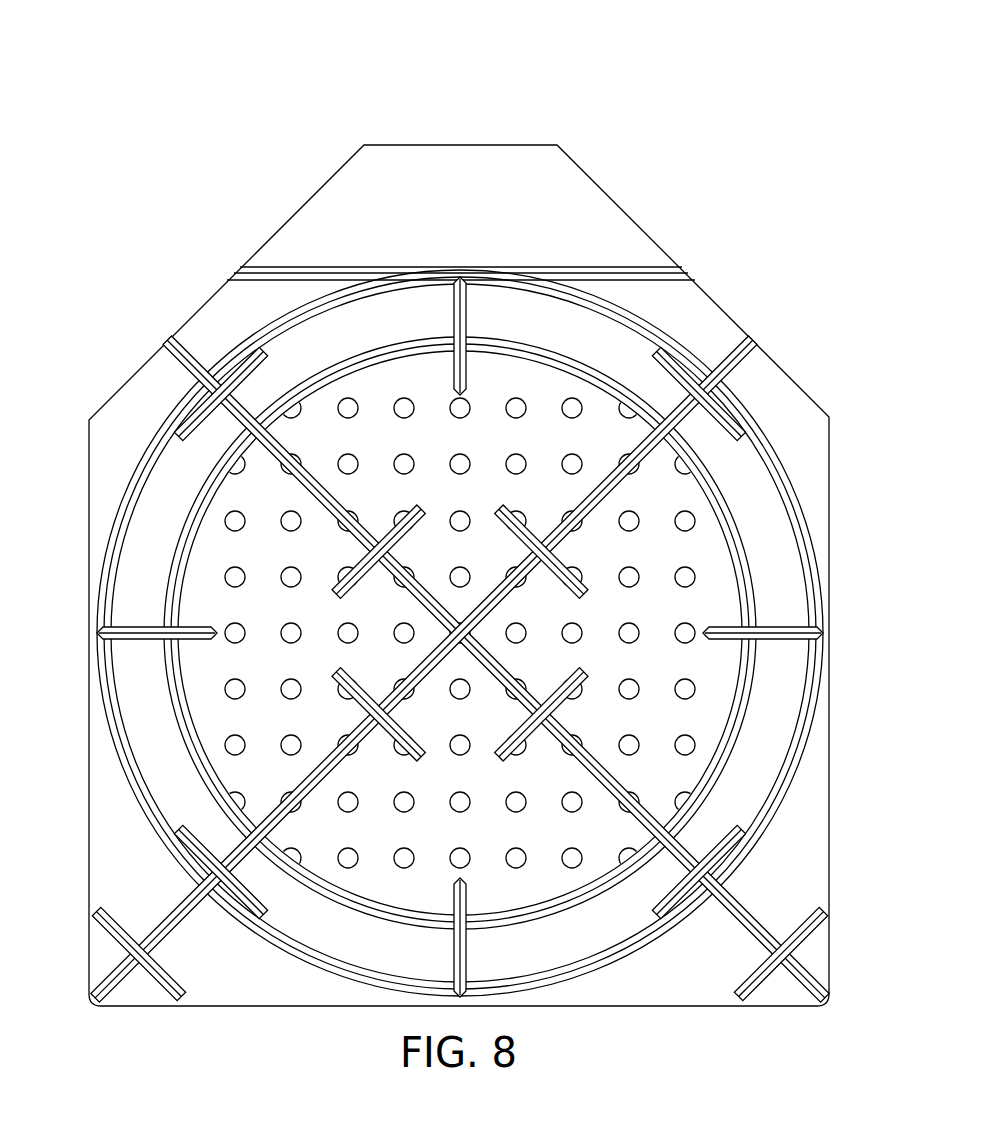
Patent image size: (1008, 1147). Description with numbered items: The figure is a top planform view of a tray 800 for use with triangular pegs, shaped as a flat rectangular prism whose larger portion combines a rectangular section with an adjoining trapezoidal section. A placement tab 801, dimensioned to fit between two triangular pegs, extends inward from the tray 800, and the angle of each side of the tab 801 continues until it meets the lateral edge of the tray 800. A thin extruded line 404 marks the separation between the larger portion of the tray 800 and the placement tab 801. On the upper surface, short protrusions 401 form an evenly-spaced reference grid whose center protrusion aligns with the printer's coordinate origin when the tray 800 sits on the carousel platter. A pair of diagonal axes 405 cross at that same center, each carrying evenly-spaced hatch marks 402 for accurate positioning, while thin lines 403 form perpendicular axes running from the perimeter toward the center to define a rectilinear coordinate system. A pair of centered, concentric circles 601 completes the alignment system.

The tray 800 is at (461, 545).
The placement tab 801 is at (193, 86).
The short protrusions 401 is at (695, 579).
The hatch marks 402 is at (113, 938).
The thin lines defining perpendicular axes 403 is at (798, 627).
The placement tab demarcation line 404 is at (348, 267).
The diagonal axes 405 is at (754, 922).
The concentric circles 601 is at (618, 978).